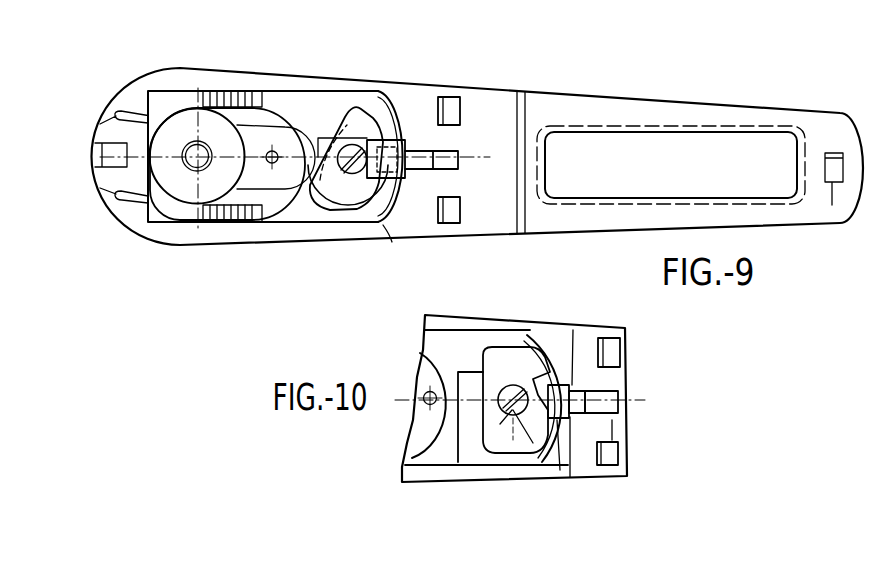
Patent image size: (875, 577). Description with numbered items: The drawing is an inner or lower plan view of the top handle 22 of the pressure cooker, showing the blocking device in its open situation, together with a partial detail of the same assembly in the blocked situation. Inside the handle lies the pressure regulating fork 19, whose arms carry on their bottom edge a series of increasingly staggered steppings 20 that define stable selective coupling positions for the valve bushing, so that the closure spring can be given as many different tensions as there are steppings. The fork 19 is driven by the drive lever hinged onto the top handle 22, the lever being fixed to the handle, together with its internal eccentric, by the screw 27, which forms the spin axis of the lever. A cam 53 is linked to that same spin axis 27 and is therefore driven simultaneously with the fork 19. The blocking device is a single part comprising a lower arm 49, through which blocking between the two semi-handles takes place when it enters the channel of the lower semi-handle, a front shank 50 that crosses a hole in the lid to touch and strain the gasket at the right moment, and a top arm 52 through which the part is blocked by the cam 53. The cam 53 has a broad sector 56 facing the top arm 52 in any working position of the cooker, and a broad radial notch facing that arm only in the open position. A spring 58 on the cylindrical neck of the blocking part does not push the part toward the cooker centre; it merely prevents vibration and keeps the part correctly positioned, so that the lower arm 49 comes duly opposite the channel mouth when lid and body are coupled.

In FIG. 9, the fork 19 is at (297, 107).
In FIG. 10, the fork 19 is at (457, 343).
In FIG. 9, the steppings 20 is at (238, 90).
In FIG. 9, the top handle 22 is at (688, 107).
In FIG. 10, the top handle 22 is at (612, 431).
In FIG. 9, the screw 27 is at (355, 195).
In FIG. 10, the screw 27 is at (511, 385).
In FIG. 9, the lower arm 49 is at (418, 150).
In FIG. 10, the lower arm 49 is at (603, 398).
In FIG. 9, the front shank 50 is at (392, 140).
In FIG. 10, the front shank 50 is at (583, 352).
In FIG. 9, the top arm 52 is at (372, 138).
In FIG. 10, the top arm 52 is at (549, 385).
In FIG. 9, the cam 53 is at (327, 205).
In FIG. 9, the broad sector 56 is at (388, 212).
In FIG. 10, the broad sector 56 is at (557, 420).
In FIG. 10, the spring 58 is at (507, 453).